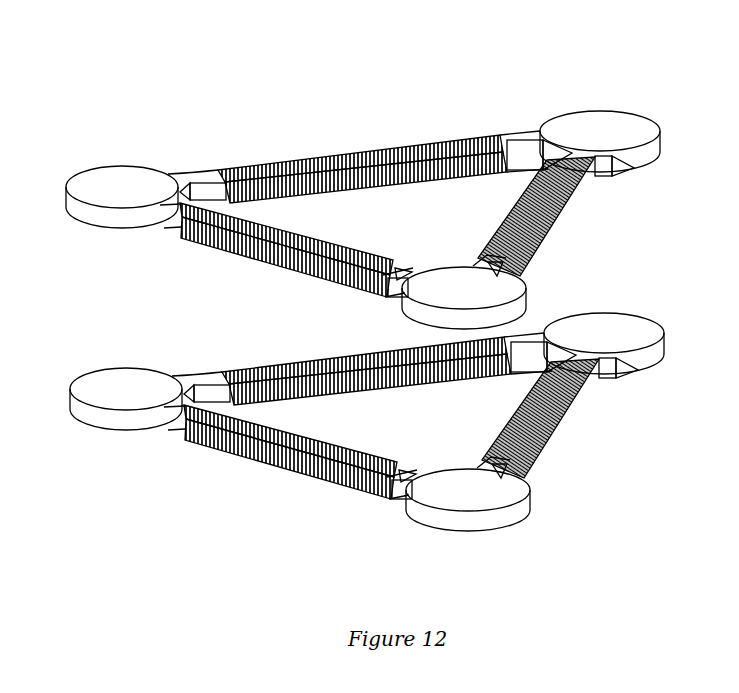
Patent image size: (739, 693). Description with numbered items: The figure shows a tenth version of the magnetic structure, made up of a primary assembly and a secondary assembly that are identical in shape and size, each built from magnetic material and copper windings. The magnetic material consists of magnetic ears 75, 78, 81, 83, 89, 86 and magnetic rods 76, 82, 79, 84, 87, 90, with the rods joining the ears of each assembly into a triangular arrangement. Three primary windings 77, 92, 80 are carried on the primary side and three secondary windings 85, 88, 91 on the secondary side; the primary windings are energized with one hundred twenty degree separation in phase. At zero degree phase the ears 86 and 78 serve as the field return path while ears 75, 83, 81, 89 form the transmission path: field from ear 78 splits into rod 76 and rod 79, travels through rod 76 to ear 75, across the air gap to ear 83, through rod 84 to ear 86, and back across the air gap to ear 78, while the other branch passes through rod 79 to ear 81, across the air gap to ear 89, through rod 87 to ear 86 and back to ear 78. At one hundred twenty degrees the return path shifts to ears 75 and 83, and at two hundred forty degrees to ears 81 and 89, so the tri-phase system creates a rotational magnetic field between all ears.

The magnetic ear 75 is at (480, 489).
The magnetic rod 76 is at (401, 489).
The primary winding 77 is at (281, 466).
The magnetic ear 78 is at (108, 388).
The magnetic rod 79 is at (211, 373).
The primary winding 80 is at (327, 362).
The magnetic ear 81 is at (603, 333).
The magnetic rod 82 is at (598, 368).
The magnetic ear 83 is at (480, 289).
The magnetic rod 84 is at (407, 272).
The secondary winding 85 is at (322, 232).
The magnetic ear 86 is at (118, 193).
The magnetic rod 87 is at (207, 180).
The secondary winding 88 is at (353, 150).
The magnetic ear 89 is at (596, 123).
The magnetic rod 90 is at (636, 170).
The secondary winding 91 is at (568, 215).
The primary winding 92 is at (566, 428).